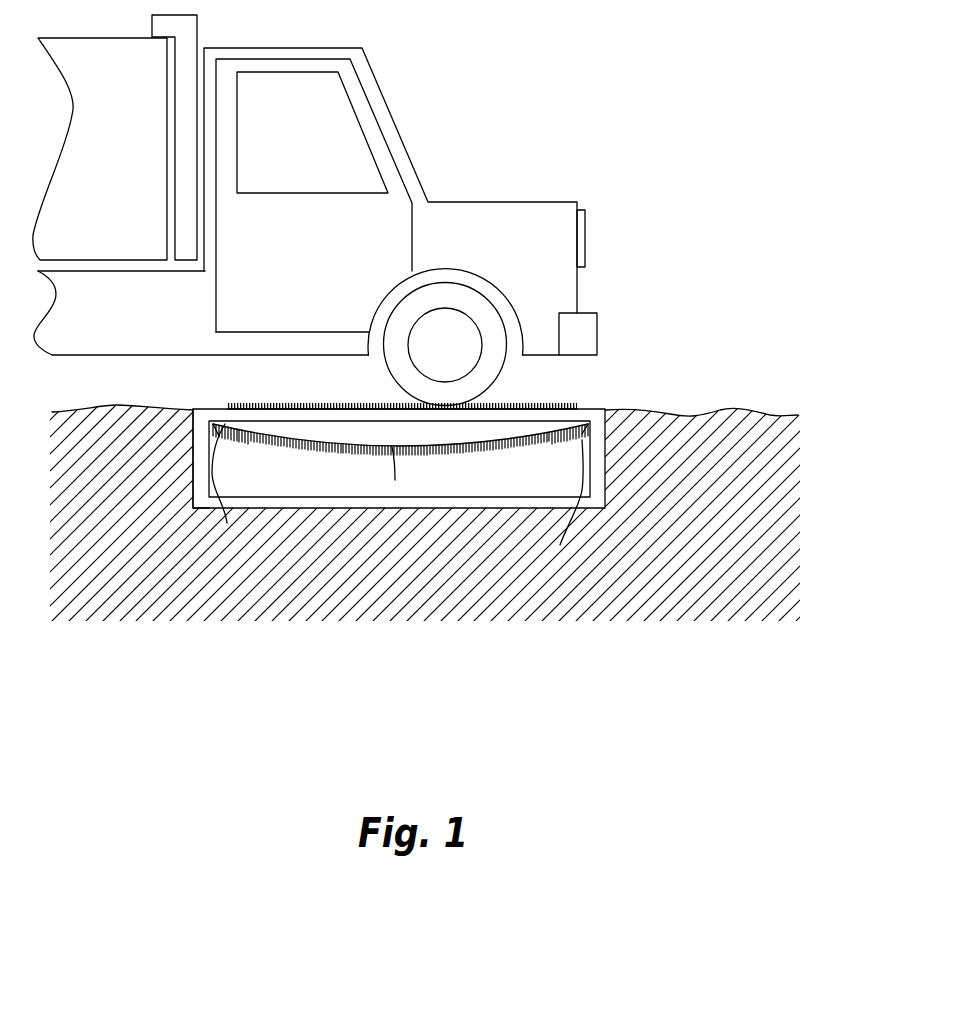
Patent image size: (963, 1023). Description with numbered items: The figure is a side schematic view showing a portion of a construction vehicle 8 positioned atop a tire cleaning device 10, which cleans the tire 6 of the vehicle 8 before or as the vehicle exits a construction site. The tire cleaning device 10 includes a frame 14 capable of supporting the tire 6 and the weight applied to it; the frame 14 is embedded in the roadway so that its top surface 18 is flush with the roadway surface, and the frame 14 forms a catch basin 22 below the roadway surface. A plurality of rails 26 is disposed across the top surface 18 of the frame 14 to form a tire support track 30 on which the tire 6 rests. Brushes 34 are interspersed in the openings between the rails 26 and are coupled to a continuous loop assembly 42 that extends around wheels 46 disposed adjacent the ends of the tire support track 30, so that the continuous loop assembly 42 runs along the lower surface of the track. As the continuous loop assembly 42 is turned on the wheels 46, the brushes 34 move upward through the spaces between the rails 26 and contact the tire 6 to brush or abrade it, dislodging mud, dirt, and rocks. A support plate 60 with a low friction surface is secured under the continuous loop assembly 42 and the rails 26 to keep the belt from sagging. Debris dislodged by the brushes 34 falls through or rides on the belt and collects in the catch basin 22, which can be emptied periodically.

The vehicle 8 is at (498, 215).
The tire 6 is at (496, 377).
The tire cleaning device 10 is at (421, 526).
The frame 14 is at (603, 490).
The rails 26 is at (203, 415).
The support plate 60 is at (529, 407).
The top surface 18 is at (247, 404).
The tire support track 30 is at (295, 404).
The brushes 34 is at (355, 404).
The wheels 46 is at (225, 424).
The continuous loop assembly 42 is at (392, 447).
The catch basin 22 is at (518, 481).